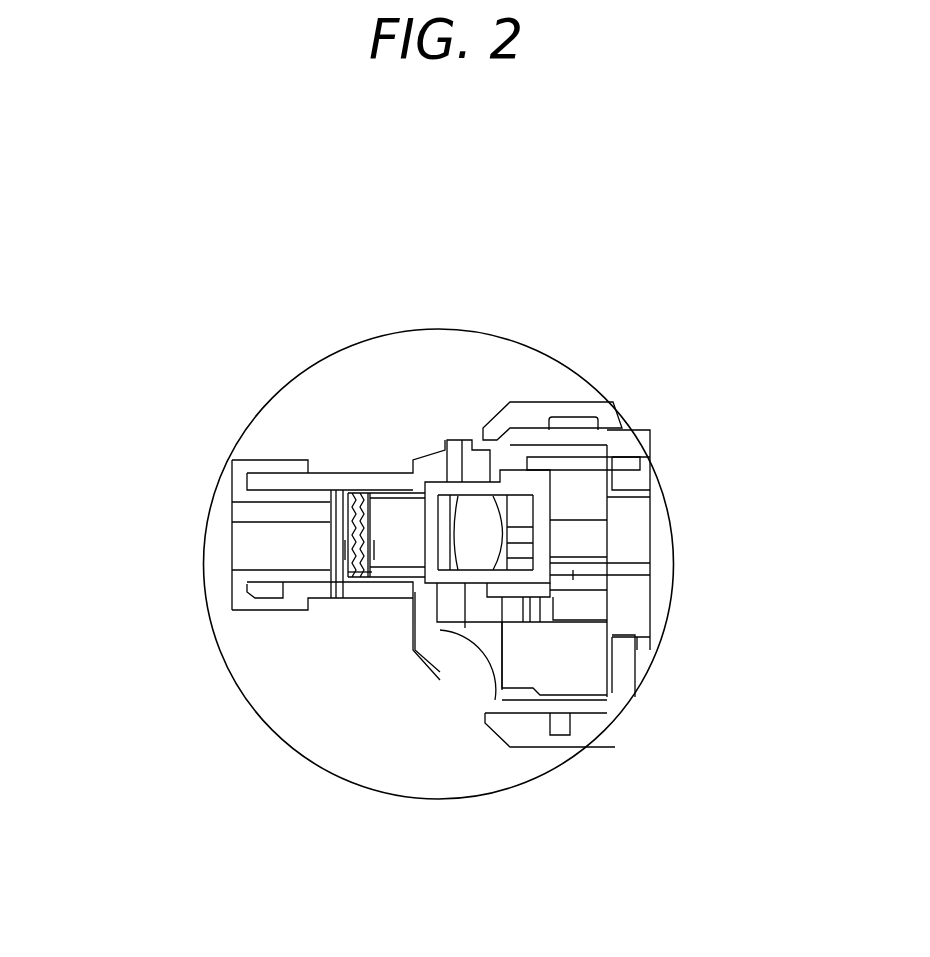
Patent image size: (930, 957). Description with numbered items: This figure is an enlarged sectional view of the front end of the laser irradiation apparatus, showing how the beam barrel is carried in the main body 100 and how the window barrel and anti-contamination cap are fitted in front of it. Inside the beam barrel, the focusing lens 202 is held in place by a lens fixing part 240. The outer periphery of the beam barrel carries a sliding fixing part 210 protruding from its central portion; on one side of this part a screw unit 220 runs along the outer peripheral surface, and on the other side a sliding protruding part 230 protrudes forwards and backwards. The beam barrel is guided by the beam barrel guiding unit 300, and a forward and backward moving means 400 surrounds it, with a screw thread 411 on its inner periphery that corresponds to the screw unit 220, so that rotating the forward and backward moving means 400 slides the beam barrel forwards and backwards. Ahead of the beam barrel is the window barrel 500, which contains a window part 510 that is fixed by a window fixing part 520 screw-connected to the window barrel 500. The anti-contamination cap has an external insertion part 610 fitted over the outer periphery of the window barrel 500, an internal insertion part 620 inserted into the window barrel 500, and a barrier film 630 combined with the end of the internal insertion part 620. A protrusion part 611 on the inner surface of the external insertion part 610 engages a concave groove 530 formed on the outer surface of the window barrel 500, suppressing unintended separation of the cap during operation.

The main body 100 is at (602, 408).
The focusing lens 202 is at (485, 518).
The sliding fixing part 210 is at (500, 595).
The screw unit 220 is at (481, 583).
The sliding protruding part 230 is at (530, 581).
The lens fixing part 240 is at (520, 535).
The beam barrel guiding unit 300 is at (575, 443).
The forward and backward moving means 400 is at (463, 460).
The screw thread 411 is at (446, 582).
The window barrel 500 is at (352, 480).
The window part 510 is at (347, 556).
The window fixing part 520 is at (357, 572).
The concave groove 530 is at (285, 598).
The external insertion part 610 is at (258, 467).
The protrusion part 611 is at (285, 598).
The internal insertion part 620 is at (292, 497).
The barrier film 630 is at (330, 525).